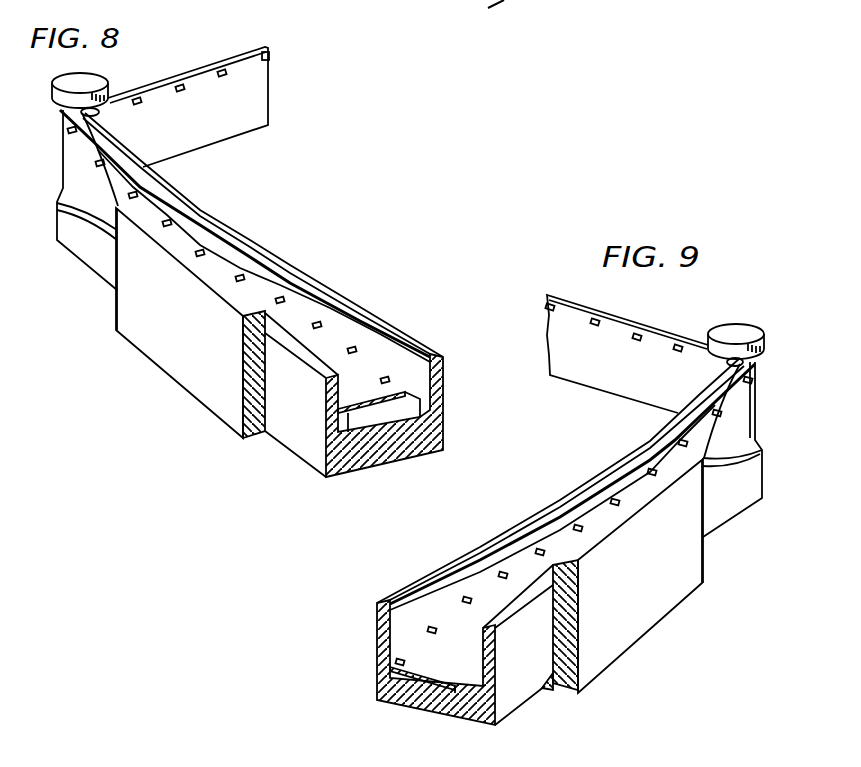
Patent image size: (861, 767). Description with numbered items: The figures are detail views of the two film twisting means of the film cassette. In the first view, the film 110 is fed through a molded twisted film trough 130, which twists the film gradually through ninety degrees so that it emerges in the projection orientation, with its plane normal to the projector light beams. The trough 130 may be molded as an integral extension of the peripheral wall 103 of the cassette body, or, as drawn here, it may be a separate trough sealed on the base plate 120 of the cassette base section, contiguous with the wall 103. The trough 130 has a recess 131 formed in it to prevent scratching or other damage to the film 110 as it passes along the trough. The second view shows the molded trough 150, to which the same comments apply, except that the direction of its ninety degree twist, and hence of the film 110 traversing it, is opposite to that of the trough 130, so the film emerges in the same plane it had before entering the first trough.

In FIG. 8, the peripheral wall 103 is at (193, 362).
In FIG. 9, the peripheral wall 103 is at (632, 610).
In FIG. 8, the film 110 is at (330, 348).
In FIG. 8, the base plate 120 is at (272, 438).
In FIG. 8, the film trough 130 is at (272, 302).
In FIG. 8, the recess 131 is at (371, 423).
In FIG. 9, the molded trough 150 is at (735, 551).